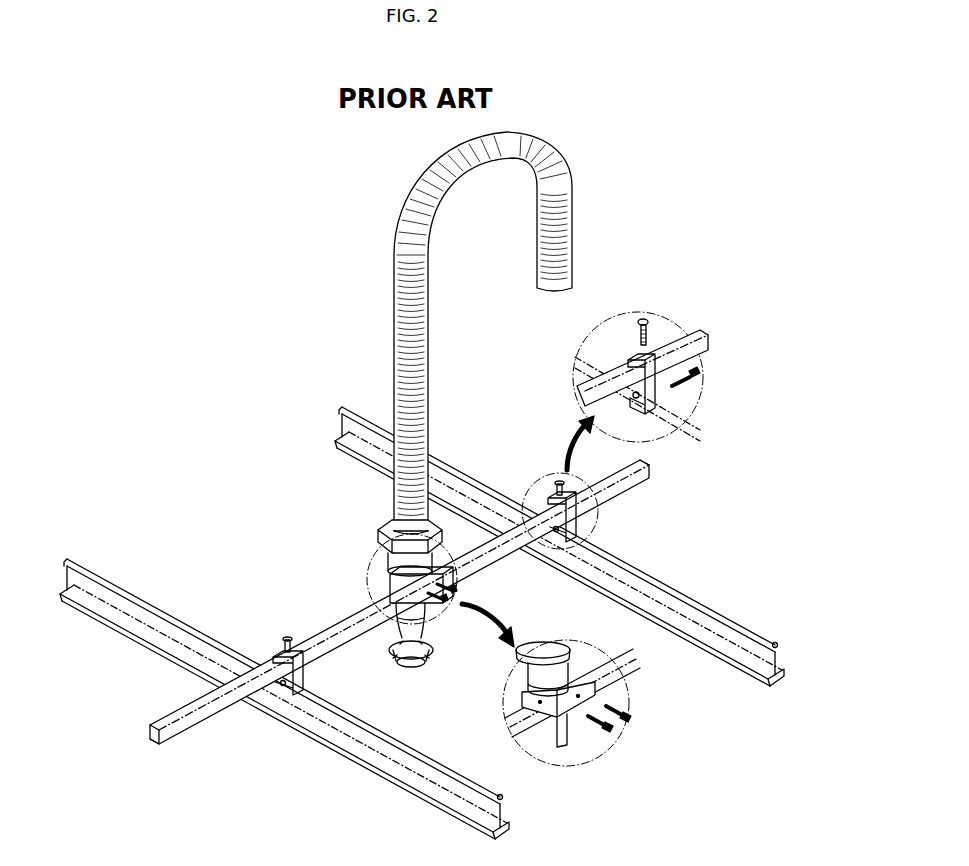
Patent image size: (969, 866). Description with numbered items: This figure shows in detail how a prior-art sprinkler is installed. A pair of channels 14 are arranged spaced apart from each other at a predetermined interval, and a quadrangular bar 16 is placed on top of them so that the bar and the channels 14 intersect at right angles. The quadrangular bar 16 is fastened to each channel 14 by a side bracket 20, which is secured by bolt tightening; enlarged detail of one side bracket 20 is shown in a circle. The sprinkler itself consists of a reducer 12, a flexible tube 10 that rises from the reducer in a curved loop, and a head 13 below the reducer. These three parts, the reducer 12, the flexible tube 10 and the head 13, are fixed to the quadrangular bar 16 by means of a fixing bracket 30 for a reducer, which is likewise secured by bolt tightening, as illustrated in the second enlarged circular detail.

The flexible tube 10 is at (392, 298).
The reducer 12 is at (403, 630).
The head 13 is at (435, 657).
The channels 14 is at (117, 588).
The quadrangular bar 16 is at (625, 481).
The side bracket 20 is at (292, 635).
The fixing bracket for a reducer 30 is at (466, 590).